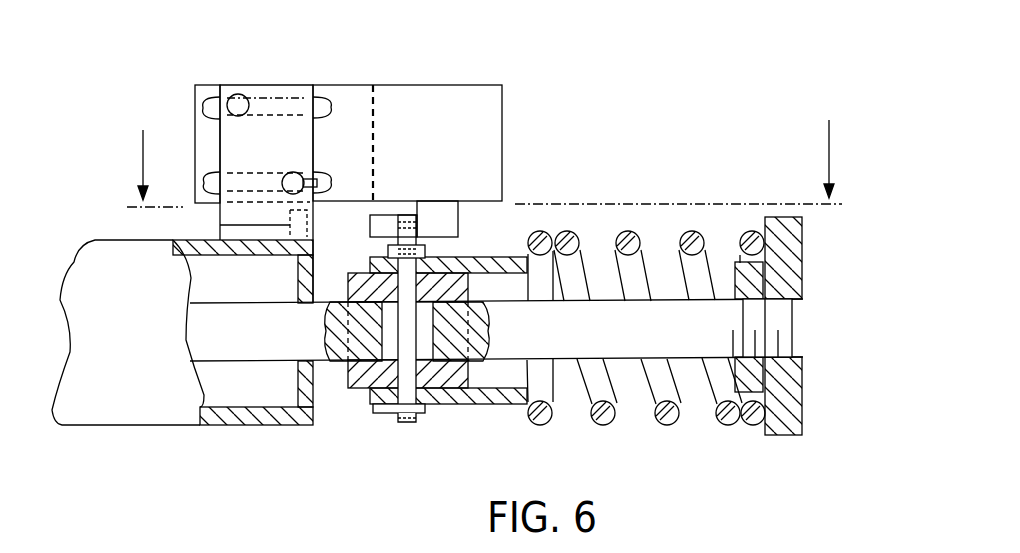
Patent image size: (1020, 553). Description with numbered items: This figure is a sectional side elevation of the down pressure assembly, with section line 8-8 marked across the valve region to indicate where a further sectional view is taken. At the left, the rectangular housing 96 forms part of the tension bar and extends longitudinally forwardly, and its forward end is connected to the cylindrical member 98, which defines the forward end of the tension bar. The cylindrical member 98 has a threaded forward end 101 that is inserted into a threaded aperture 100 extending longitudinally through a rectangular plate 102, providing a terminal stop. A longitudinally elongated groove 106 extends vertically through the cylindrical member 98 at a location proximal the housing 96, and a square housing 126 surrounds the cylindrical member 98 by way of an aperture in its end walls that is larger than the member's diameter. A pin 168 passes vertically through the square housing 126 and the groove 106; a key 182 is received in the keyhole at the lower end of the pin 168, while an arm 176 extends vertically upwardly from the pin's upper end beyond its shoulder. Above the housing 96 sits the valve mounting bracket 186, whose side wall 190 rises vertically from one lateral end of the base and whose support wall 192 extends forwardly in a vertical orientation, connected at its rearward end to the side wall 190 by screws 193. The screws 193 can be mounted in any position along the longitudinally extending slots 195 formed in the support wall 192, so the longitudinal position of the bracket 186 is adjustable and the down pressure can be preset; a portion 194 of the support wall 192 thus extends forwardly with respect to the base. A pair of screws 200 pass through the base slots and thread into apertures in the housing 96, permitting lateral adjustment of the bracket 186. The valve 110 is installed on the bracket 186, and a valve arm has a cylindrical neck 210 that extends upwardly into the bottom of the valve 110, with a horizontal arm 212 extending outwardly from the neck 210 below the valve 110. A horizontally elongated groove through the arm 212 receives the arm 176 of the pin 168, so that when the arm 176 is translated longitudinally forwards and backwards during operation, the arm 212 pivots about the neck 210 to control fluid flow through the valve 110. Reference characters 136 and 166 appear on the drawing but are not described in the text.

The section line 8- 8 is at (484, 150).
The rectangular housing 96 is at (126, 372).
The cylindrical member 98 is at (646, 311).
The threaded aperture 100 is at (802, 373).
The threaded forward end 101 is at (802, 327).
The rectangular plate 102 is at (802, 265).
The elongated groove 106 is at (326, 335).
The valve 110 is at (369, 110).
The square housing 126 is at (472, 378).
The bushing 136 is at (467, 308).
The spring coil 166 is at (685, 232).
The pin 168 is at (396, 432).
The arm 176 is at (388, 240).
The key 182 is at (372, 352).
The valve mounting bracket 186 is at (334, 157).
The side wall 190 is at (218, 146).
The support wall 192 is at (283, 157).
The screws 193 is at (259, 97).
The portion of support wall 194 is at (425, 106).
The longitudinally extending slots 195 is at (240, 172).
The screws 200 is at (266, 214).
The cylindrical neck 210 is at (463, 221).
The horizontal arm 212 is at (372, 233).